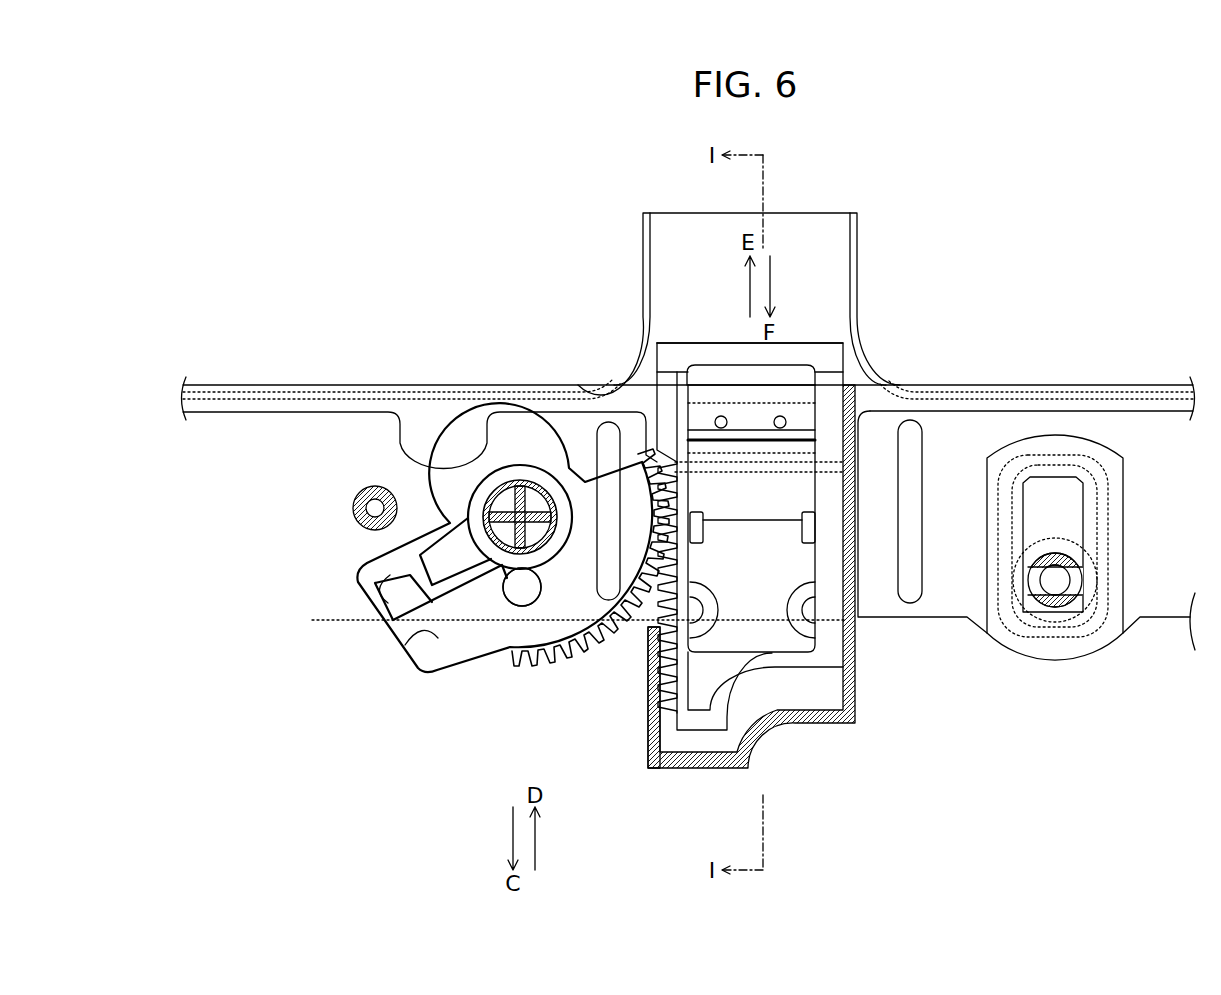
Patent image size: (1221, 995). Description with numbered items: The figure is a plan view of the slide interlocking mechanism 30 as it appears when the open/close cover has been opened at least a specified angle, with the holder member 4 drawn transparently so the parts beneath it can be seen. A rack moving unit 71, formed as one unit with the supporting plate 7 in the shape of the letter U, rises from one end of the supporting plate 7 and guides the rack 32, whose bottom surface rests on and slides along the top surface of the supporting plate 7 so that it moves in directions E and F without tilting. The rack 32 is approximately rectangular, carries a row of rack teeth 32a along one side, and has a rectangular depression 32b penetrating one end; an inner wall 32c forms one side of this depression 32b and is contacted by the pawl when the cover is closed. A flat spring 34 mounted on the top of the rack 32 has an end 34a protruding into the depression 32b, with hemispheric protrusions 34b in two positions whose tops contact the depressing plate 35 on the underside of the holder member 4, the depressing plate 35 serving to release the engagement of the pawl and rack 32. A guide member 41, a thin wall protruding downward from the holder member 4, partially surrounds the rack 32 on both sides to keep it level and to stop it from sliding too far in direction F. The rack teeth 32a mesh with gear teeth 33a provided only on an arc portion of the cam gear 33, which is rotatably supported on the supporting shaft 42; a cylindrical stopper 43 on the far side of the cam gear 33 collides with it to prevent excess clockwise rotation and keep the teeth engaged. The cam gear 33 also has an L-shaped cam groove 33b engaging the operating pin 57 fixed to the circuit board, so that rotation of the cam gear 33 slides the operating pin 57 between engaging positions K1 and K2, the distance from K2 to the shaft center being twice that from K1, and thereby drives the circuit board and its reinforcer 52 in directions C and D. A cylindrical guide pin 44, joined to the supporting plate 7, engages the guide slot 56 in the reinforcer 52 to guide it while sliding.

The holder member 4 is at (630, 388).
The supporting plate 7 is at (897, 208).
The slide interlocking mechanism 30 is at (913, 338).
The rack 32 is at (815, 688).
The rack teeth 32a is at (648, 728).
The depression 32b is at (703, 370).
The inner wall 32c is at (743, 370).
The cam gear 33 is at (516, 699).
The gear teeth 33a is at (580, 645).
The cam groove 33b is at (400, 648).
The flat spring 34 is at (858, 428).
The end 34a is at (790, 385).
The protrusions 34b is at (776, 420).
The depressing plate 35 is at (752, 440).
The guide member 41 is at (698, 770).
The supporting shaft 42 is at (538, 482).
The stopper 43 is at (356, 497).
The guide pin 44 is at (1063, 603).
The reinforcer 52 is at (342, 422).
The guide slot 56 is at (1027, 500).
The operating pin 57 is at (505, 590).
The rack moving unit 71 is at (643, 218).
The engaging position K1 is at (540, 605).
The engaging position K2 is at (378, 590).